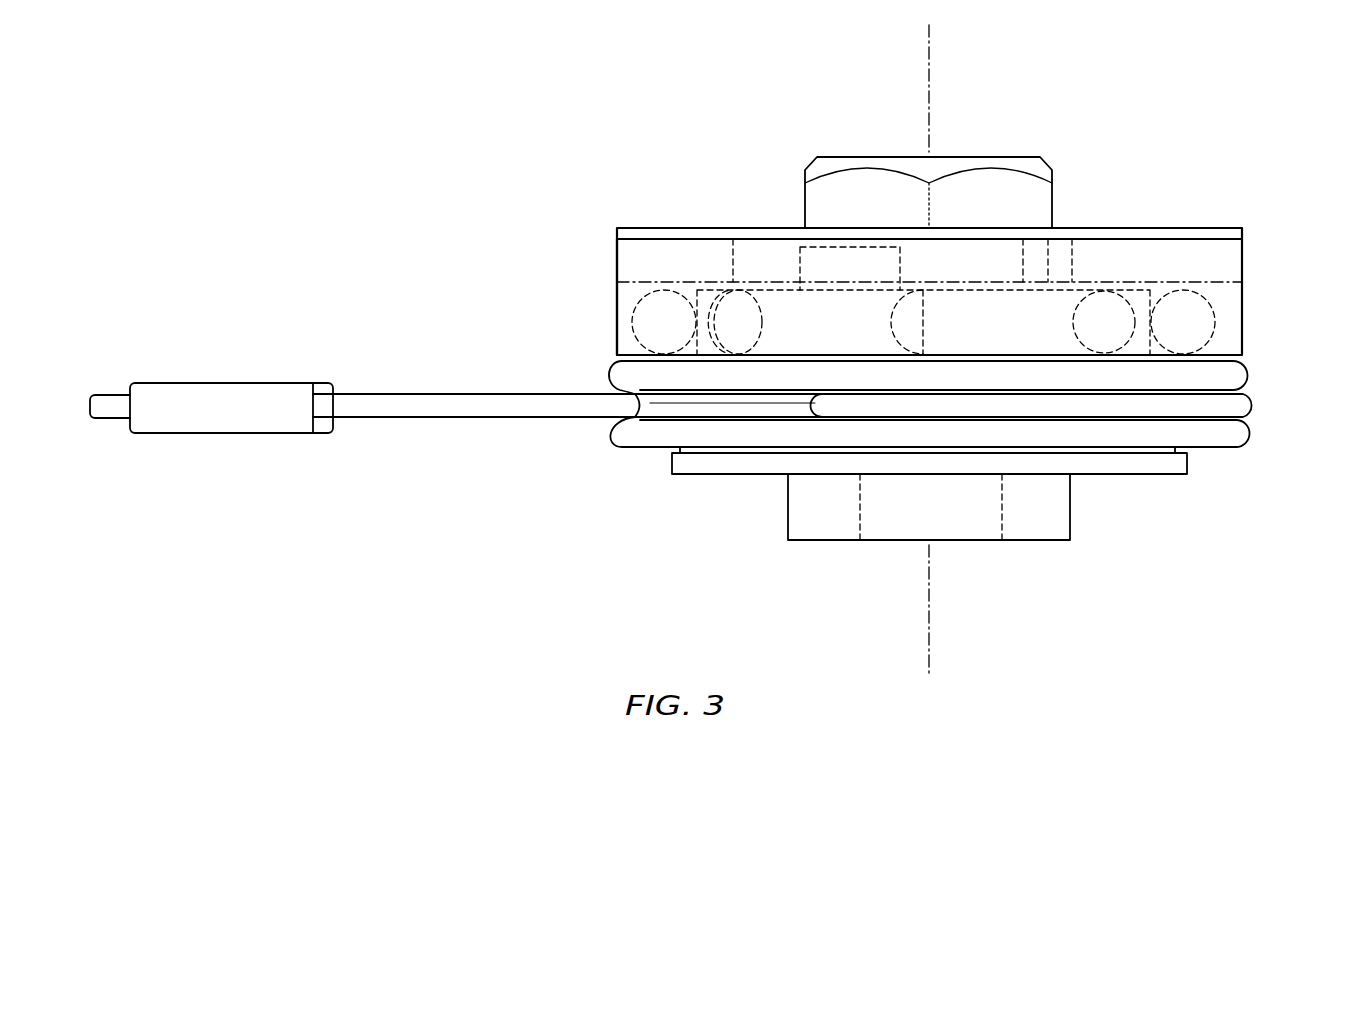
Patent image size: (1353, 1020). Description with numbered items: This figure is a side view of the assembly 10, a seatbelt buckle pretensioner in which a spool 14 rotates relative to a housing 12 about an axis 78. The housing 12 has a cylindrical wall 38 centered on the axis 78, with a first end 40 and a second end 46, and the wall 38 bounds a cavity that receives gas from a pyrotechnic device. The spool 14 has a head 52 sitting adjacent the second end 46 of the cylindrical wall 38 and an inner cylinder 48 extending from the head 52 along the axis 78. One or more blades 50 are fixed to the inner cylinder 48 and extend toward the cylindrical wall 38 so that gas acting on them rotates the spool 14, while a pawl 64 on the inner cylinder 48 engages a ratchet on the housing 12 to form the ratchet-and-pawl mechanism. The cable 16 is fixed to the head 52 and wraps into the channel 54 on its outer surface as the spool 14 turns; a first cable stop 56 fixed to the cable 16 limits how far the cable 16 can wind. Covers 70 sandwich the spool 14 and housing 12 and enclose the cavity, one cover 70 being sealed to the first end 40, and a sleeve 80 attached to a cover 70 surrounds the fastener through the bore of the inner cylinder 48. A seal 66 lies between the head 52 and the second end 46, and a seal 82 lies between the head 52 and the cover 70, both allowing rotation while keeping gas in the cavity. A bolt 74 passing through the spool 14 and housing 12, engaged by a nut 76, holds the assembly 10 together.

The assembly 10 is at (676, 94).
The housing 12 is at (617, 300).
The spool 14 is at (1222, 450).
The cable 16 is at (395, 394).
The cylindrical wall 38 is at (617, 258).
The first end 40 is at (640, 227).
The second end 46 is at (614, 372).
The inner cylinder 48 is at (1145, 296).
The blade 50 is at (1216, 322).
The head 52 is at (1254, 432).
The channel 54 is at (735, 407).
The first cable stop 56 is at (225, 383).
The pawl 64 is at (797, 258).
The seal 66 is at (1247, 362).
The cover 70 is at (703, 476).
The bolt 74 is at (1052, 192).
The nut 76 is at (1070, 518).
The axis 78 is at (930, 68).
The sleeve 80 is at (1025, 263).
The seal 82 is at (682, 449).